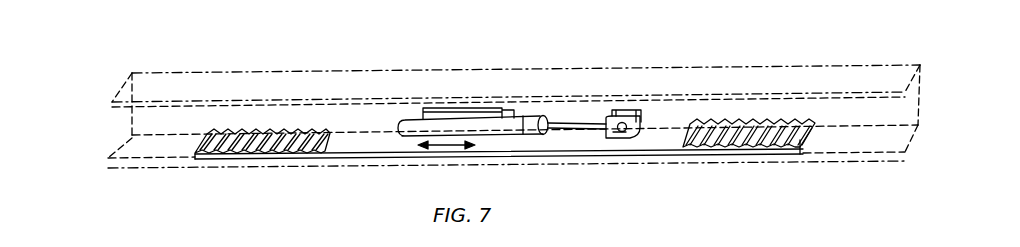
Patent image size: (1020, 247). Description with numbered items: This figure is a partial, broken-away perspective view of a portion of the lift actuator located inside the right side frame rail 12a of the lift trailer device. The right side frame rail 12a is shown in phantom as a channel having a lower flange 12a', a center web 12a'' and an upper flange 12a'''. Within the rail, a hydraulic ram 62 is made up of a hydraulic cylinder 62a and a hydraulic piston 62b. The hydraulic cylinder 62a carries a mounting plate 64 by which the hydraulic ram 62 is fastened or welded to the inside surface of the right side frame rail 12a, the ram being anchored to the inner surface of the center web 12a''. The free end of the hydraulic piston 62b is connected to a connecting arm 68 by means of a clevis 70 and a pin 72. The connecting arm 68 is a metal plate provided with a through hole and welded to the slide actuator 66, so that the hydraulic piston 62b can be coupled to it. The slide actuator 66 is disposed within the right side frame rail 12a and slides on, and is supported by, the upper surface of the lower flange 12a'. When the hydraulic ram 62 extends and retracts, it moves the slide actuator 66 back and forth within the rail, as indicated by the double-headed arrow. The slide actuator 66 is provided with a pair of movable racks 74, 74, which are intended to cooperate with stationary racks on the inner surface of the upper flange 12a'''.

The right side frame rail 12a is at (514, 92).
The lower flange 12a' is at (506, 180).
The center web 12a'' is at (96, 115).
The upper flange 12a''' is at (877, 80).
The hydraulic ram 62 is at (410, 116).
The hydraulic cylinder 62a is at (522, 125).
The hydraulic piston 62b is at (586, 120).
The mounting plate 64 is at (472, 110).
The slide actuator 66 is at (362, 145).
The connecting arm 68 is at (628, 138).
The clevis 70 is at (627, 111).
The pin 72 is at (618, 134).
The movable rack 74 is at (268, 152).